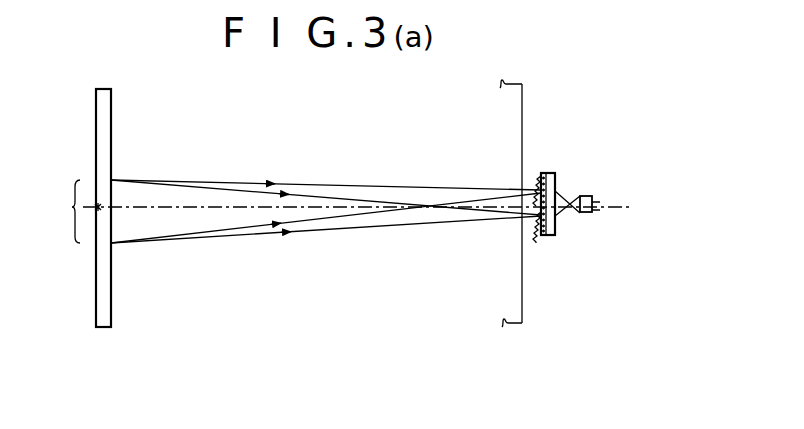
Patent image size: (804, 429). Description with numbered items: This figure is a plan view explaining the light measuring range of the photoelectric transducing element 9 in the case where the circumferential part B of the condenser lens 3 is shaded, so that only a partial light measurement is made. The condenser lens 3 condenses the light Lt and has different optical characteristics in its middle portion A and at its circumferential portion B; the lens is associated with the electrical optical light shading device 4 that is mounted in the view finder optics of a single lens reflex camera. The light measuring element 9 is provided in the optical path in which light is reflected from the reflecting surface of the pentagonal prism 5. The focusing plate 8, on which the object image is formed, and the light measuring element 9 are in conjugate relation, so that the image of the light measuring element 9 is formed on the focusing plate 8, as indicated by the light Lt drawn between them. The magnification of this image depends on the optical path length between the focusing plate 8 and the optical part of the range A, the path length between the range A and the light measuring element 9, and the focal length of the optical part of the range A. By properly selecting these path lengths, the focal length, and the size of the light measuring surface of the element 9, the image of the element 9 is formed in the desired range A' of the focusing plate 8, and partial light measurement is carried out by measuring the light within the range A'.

The condenser lens 3 is at (540, 172).
The electrical optical light shading device 4 is at (562, 169).
The pentagonal prism 5 is at (507, 106).
The focusing plate 8 is at (101, 291).
The photoelectric transducing element 9 is at (587, 195).
The middle portion A is at (518, 227).
The circumferential portion B is at (537, 176).
The range of the focusing plate A' is at (63, 211).
The light Lt is at (326, 200).